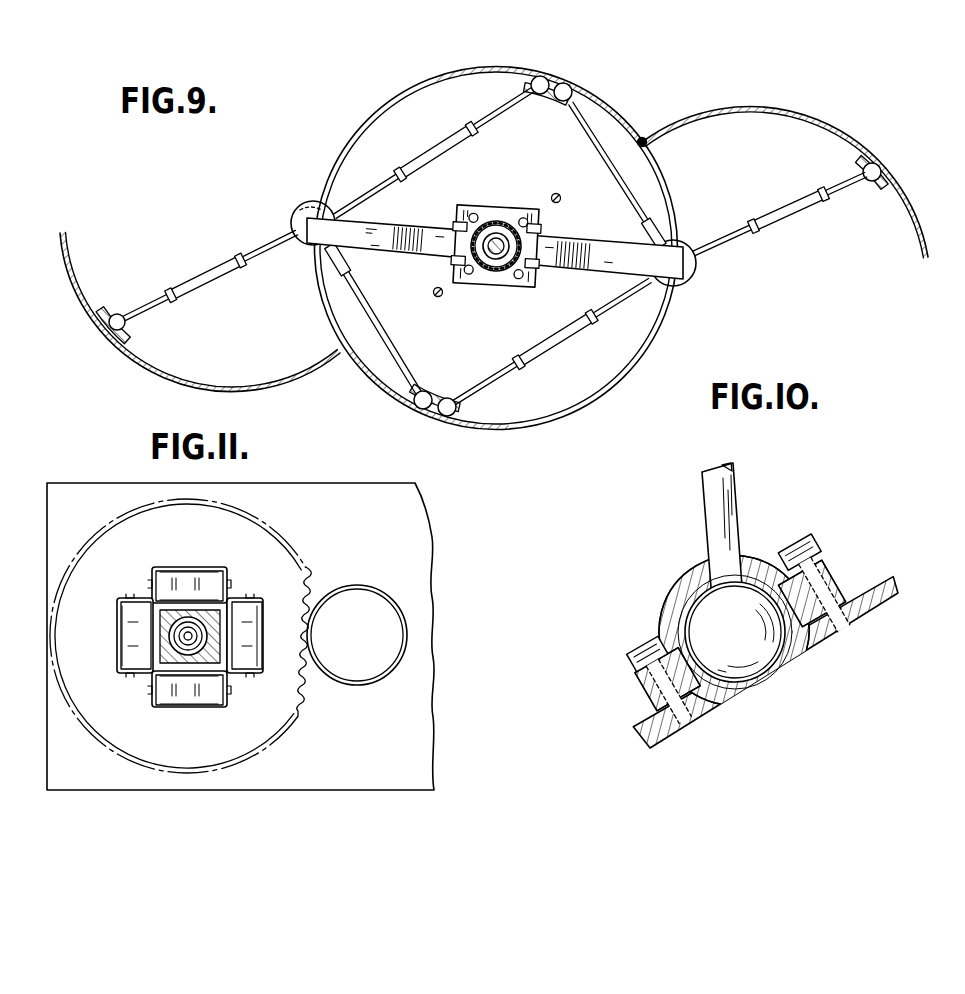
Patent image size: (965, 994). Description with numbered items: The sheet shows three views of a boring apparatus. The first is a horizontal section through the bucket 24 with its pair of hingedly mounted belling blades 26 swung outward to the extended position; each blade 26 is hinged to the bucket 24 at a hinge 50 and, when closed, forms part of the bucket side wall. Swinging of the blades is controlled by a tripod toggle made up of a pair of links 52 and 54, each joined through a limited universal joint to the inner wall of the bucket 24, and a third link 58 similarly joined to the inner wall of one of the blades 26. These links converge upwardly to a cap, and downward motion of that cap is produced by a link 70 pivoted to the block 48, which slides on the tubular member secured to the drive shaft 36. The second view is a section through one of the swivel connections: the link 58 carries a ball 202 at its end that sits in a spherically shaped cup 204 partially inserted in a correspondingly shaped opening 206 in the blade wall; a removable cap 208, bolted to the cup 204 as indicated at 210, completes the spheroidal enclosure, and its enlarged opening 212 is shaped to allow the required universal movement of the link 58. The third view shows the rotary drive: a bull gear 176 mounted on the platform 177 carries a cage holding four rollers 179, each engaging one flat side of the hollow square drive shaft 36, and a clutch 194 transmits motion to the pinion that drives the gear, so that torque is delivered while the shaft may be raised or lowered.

In FIG. 9, the bucket 24 is at (513, 68).
In FIG. 9, the belling blade 26 is at (152, 375).
In FIG. 11, the drive shaft 36 is at (210, 654).
In FIG. 9, the block 48 is at (499, 205).
In FIG. 9, the hinge 50 is at (643, 139).
In FIG. 9, the link 52 is at (502, 112).
In FIG. 9, the link 54 is at (604, 160).
In FIG. 9, the third link 58 is at (249, 256).
In FIG. 10, the third link 58 is at (738, 502).
In FIG. 9, the link 70 is at (391, 243).
In FIG. 11, the bull gear 176 is at (301, 713).
In FIG. 11, the platform 177 is at (348, 480).
In FIG. 11, the rollers 179 is at (260, 625).
In FIG. 11, the clutch 194 is at (381, 591).
In FIG. 10, the ball 202 is at (697, 597).
In FIG. 10, the cup 204 is at (797, 660).
In FIG. 10, the opening 206 is at (737, 707).
In FIG. 10, the cap 208 is at (755, 562).
In FIG. 10, the bolts 210 is at (803, 555).
In FIG. 10, the enlarged opening 212 is at (667, 613).